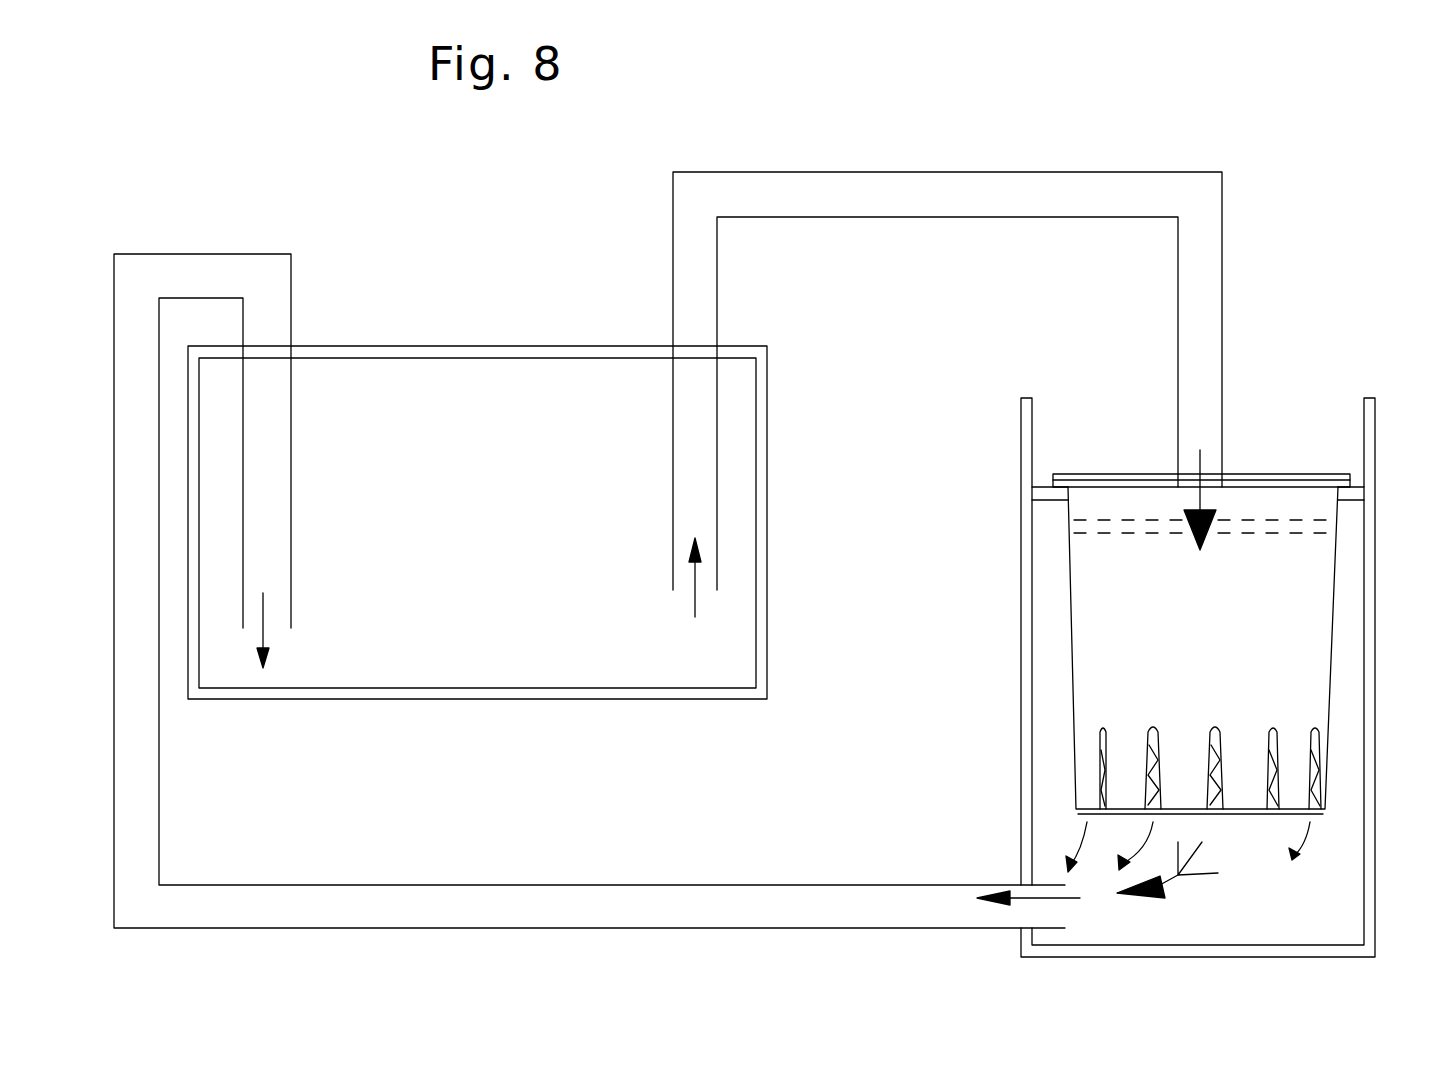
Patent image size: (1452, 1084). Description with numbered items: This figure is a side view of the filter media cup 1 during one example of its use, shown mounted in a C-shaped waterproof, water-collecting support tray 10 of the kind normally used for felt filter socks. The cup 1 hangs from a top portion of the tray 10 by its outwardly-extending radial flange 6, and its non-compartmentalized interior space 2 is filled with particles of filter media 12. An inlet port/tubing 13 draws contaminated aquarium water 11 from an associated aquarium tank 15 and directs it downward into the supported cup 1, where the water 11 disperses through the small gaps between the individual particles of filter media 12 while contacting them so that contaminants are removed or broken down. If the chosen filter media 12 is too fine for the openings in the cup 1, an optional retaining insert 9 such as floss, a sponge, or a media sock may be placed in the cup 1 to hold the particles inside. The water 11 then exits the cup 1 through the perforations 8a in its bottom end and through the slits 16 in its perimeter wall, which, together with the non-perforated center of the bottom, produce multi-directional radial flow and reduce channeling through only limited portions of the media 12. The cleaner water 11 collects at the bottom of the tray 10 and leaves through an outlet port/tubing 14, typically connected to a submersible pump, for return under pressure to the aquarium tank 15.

The filter media cup 1 is at (1345, 654).
The non-compartmentalized interior space 2 is at (1093, 508).
The radial flange 6 is at (1254, 465).
The perforations 8a is at (1222, 828).
The retaining insert 9 is at (1284, 513).
The filtration support tray 10 is at (1026, 689).
The aquarium water 11 is at (1175, 463).
The filter media 12 is at (1192, 724).
The inlet port/tubing 13 is at (999, 203).
The outlet port/tubing 14 is at (787, 898).
The aquarium tank 15 is at (610, 667).
The slits 16 is at (1128, 777).